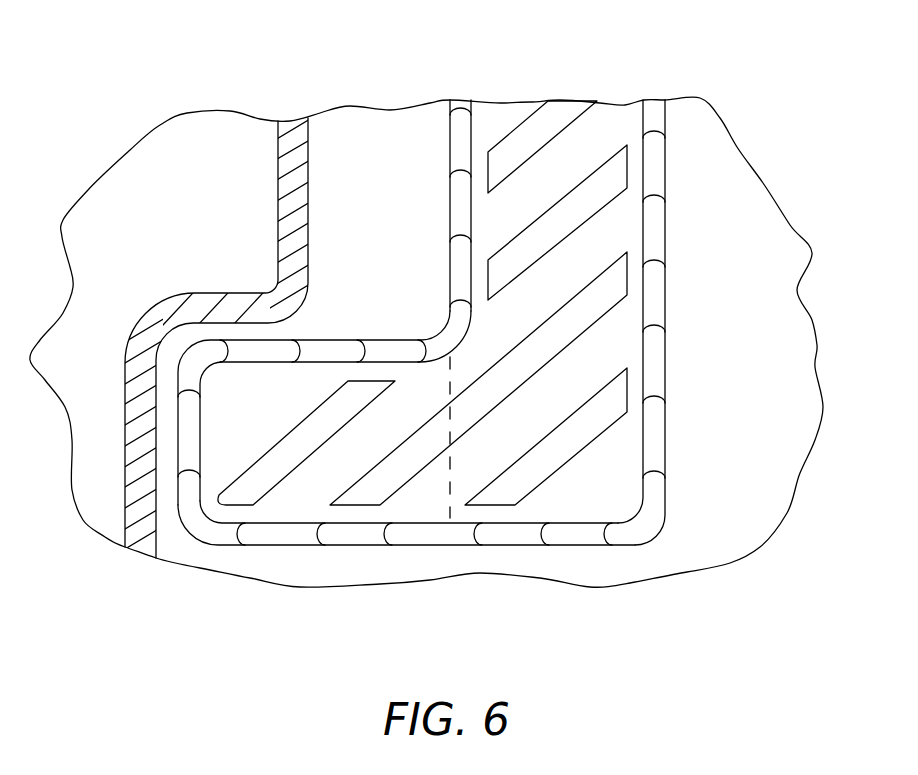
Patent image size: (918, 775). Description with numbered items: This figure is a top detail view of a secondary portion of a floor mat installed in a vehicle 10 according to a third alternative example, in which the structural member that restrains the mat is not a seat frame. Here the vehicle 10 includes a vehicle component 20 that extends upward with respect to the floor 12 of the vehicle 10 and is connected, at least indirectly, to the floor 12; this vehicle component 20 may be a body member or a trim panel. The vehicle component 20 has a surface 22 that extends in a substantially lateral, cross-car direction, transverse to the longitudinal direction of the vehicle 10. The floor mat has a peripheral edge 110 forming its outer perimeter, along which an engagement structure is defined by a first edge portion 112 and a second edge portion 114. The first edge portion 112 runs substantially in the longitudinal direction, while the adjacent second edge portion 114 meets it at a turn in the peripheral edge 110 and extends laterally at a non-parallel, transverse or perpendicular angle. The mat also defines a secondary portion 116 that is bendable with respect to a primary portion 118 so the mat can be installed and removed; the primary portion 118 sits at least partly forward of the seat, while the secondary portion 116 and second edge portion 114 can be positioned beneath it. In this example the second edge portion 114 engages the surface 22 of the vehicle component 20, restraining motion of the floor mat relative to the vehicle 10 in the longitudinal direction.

The vehicle 10 is at (244, 176).
The floor 12 is at (733, 157).
The vehicle component 20 is at (285, 235).
The surface 22 is at (248, 323).
The peripheral edge 110 is at (680, 111).
The first edge portion 112 is at (456, 151).
The second edge portion 114 is at (373, 340).
The secondary portion 116 is at (229, 560).
The primary portion 118 is at (690, 251).